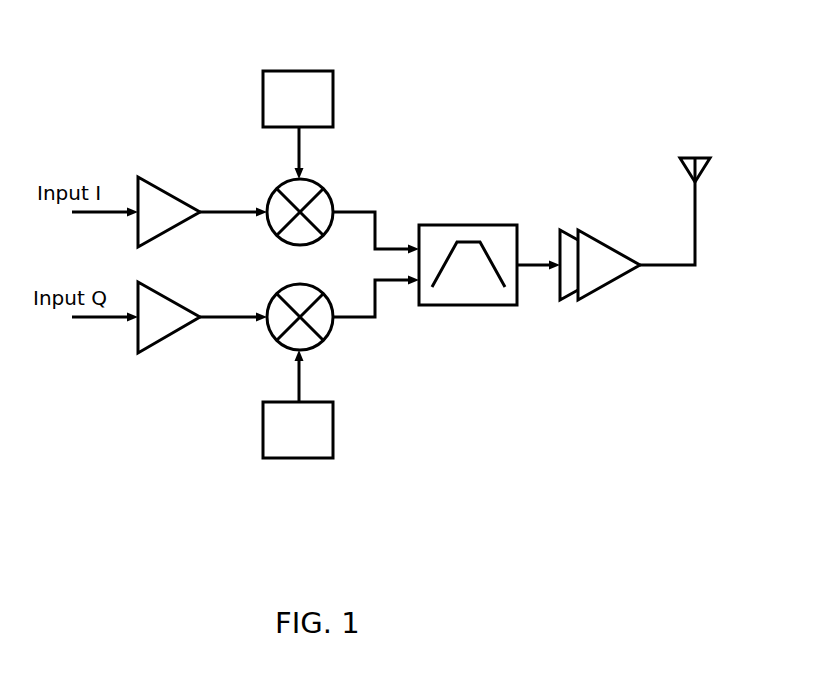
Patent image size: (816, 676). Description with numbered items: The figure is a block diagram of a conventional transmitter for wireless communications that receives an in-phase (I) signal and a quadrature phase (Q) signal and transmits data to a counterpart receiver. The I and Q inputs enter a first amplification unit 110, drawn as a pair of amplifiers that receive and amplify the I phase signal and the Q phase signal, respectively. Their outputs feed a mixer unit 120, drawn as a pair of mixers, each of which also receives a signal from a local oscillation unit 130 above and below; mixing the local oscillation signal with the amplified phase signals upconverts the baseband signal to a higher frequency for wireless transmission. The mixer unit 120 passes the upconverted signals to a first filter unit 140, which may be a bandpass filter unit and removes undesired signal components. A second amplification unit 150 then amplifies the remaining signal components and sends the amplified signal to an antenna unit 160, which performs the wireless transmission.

The first amplification unit 110 is at (168, 295).
The mixer unit 120 is at (322, 290).
The local oscillation unit 130 is at (303, 71).
The first filter unit 140 is at (487, 225).
The second amplification unit 150 is at (608, 242).
The antenna unit 160 is at (700, 158).